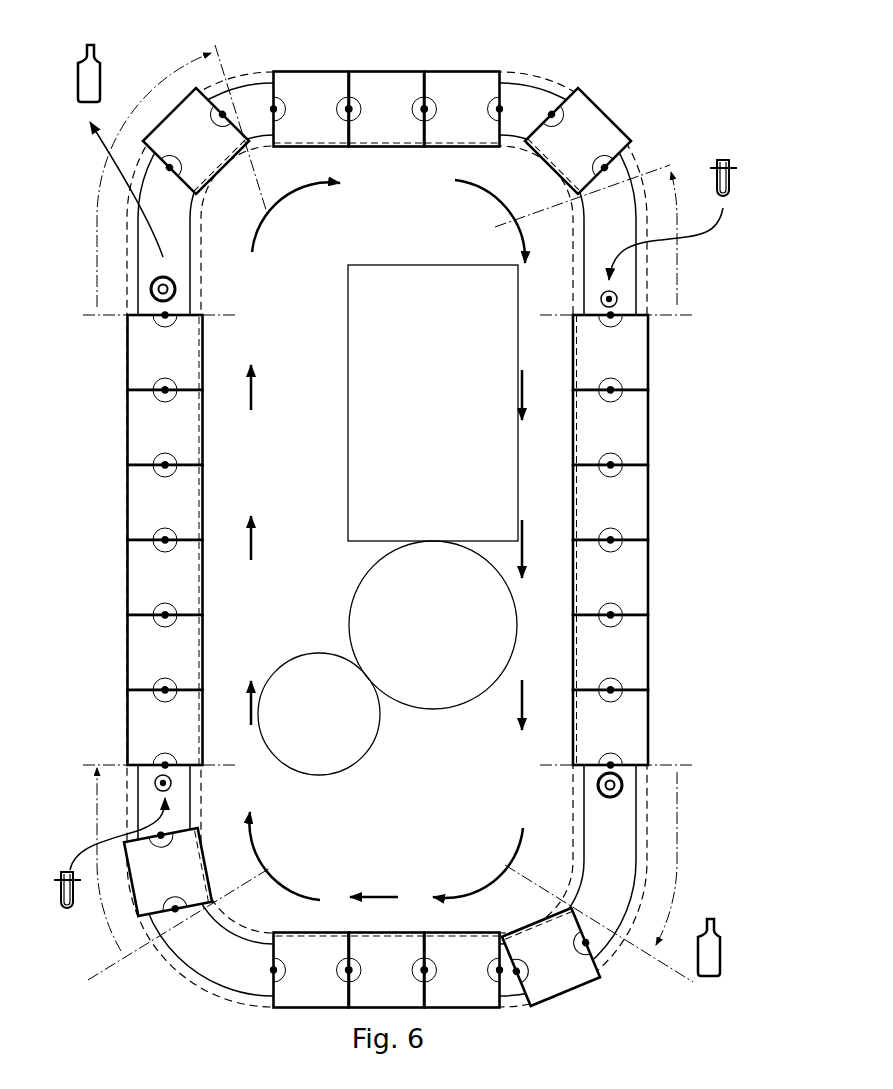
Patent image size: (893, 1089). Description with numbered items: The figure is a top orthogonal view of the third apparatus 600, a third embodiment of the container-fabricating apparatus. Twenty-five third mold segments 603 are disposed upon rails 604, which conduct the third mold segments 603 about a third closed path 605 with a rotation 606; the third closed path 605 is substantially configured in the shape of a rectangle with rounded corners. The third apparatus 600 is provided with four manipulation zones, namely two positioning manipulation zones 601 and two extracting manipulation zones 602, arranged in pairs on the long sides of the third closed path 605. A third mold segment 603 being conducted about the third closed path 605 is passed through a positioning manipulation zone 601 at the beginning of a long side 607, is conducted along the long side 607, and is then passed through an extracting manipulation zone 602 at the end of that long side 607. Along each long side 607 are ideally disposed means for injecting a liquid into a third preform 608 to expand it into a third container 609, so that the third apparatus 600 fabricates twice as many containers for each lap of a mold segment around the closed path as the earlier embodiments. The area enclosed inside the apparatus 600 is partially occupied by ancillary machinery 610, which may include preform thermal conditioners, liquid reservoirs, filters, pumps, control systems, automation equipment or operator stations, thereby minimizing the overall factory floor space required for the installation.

The third apparatus 600 is at (392, 64).
The positioning manipulation zone 601 is at (669, 165).
The extracting manipulation zone 602 is at (228, 50).
The third mold segment 603 is at (308, 76).
The rails 604 is at (524, 82).
The third closed path 605 is at (580, 357).
The rotation 606 is at (518, 710).
The long side 607 is at (105, 587).
The third preform 608 is at (723, 160).
The third container 609 is at (93, 52).
The ancillary machinery 610 is at (417, 408).